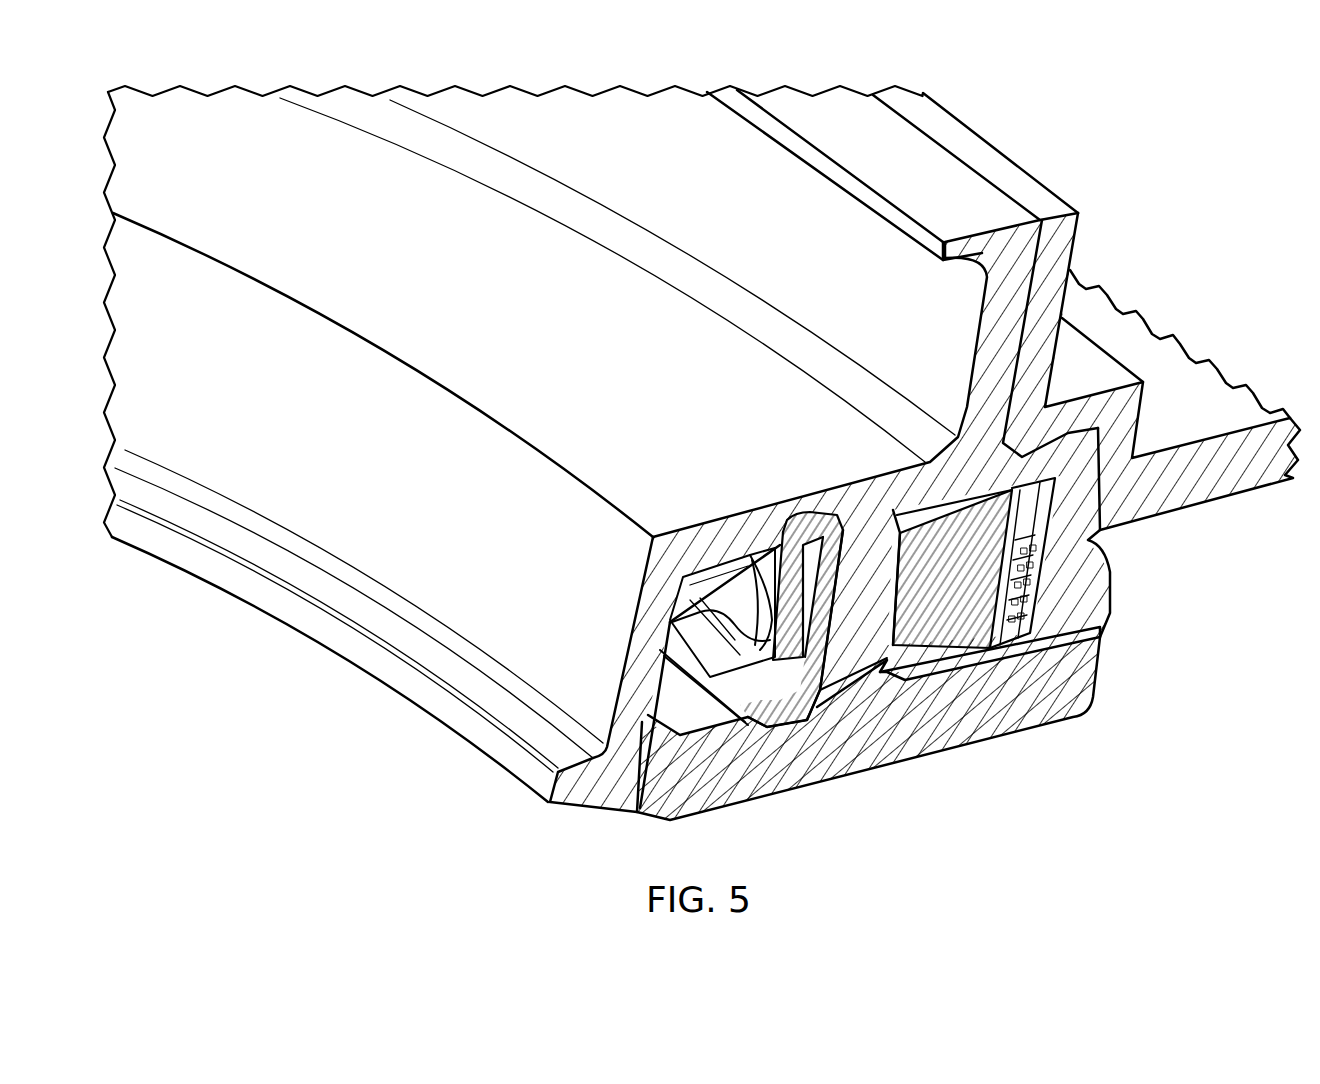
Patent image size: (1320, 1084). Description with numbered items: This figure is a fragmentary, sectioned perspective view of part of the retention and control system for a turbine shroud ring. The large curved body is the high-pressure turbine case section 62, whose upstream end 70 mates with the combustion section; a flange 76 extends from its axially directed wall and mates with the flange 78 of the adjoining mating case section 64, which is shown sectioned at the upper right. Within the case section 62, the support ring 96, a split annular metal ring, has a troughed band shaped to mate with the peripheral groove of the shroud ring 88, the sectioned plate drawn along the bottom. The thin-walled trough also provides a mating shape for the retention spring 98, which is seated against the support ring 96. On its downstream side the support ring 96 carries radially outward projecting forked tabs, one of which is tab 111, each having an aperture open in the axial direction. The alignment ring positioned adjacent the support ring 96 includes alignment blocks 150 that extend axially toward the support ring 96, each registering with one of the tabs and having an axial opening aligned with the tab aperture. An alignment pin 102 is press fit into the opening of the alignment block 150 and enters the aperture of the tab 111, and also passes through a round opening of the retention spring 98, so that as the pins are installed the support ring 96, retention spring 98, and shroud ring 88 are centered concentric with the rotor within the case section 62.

The high-pressure turbine case section 62 is at (545, 302).
The flange 76 is at (888, 157).
The flange 78 is at (992, 148).
The mating case section 64 is at (1205, 422).
The alignment pin 102 is at (855, 535).
The tab 111 is at (893, 543).
The alignment block 150 is at (975, 587).
The retention spring 98 is at (698, 642).
The support ring 96 is at (857, 657).
The upstream end 70 is at (423, 700).
The shroud ring 88 is at (1078, 695).